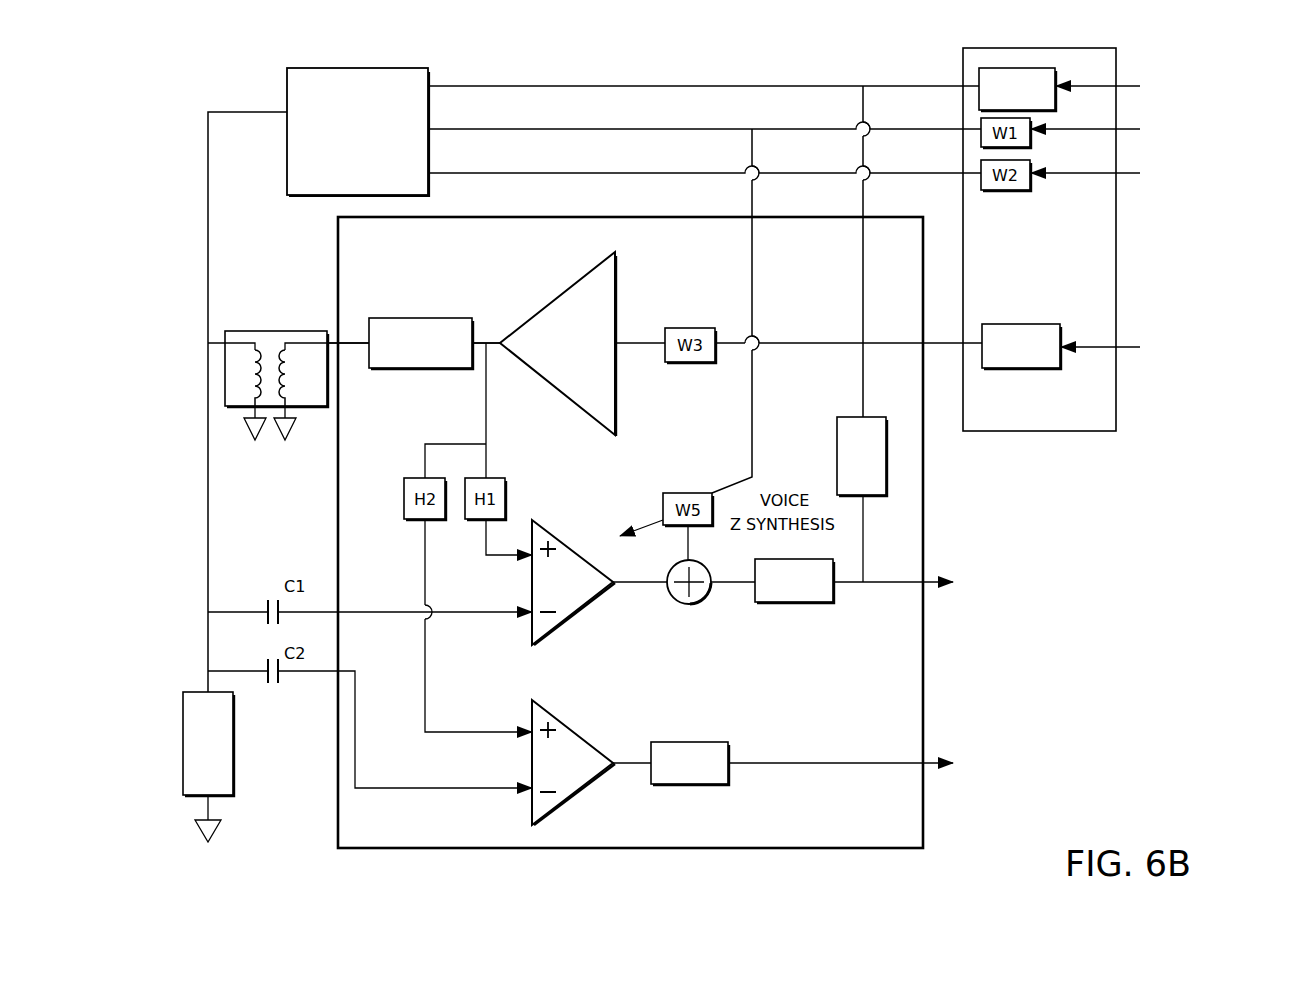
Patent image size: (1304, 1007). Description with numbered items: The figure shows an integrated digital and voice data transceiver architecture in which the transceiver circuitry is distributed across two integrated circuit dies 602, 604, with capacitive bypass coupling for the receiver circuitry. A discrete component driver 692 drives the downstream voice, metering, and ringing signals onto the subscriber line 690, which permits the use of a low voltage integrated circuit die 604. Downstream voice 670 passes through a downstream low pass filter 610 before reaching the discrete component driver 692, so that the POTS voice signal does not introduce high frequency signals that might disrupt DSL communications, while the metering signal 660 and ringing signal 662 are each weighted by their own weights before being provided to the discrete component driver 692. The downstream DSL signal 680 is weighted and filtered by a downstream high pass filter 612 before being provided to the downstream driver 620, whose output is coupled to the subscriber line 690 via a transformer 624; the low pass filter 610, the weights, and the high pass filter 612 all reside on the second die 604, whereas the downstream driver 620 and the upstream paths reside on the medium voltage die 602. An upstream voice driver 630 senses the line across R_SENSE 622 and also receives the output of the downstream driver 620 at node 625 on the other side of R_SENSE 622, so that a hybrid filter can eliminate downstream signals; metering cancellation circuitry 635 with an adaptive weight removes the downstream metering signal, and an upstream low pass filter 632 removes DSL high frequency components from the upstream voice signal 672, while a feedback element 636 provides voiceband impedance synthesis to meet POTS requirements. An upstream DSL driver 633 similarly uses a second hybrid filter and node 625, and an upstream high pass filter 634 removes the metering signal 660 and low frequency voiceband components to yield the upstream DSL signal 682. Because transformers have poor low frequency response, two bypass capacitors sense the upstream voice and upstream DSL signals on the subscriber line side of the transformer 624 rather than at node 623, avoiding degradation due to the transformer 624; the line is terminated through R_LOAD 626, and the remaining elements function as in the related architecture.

The integrated circuit die 602 is at (337, 264).
The integrated circuit die 604 is at (987, 432).
The downstream low pass filter 610 is at (1058, 78).
The downstream high pass filter 612 is at (1006, 369).
The downstream driver 620 is at (558, 344).
The R_SENSE 622 is at (432, 369).
The node 623 is at (354, 331).
The transformer 624 is at (268, 331).
The node 625 is at (490, 337).
The load resistor R_LOAD 626 is at (244, 767).
The upstream voice driver 630 is at (573, 582).
The upstream low pass filter 632 is at (796, 603).
The upstream DSL driver 633 is at (573, 762).
The upstream high pass filter 634 is at (697, 742).
The metering cancellation circuitry 635 is at (686, 604).
The feedback element 636 is at (812, 485).
The metering signal 660 is at (1154, 132).
The ringing signal 662 is at (1146, 176).
The downstream voice 670 is at (1149, 91).
The upstream voice signal 672 is at (941, 586).
The downstream DSL signal 680 is at (1142, 347).
The upstream DSL signal 682 is at (880, 764).
The subscriber line 690 is at (207, 402).
The discrete component driver 692 is at (358, 132).